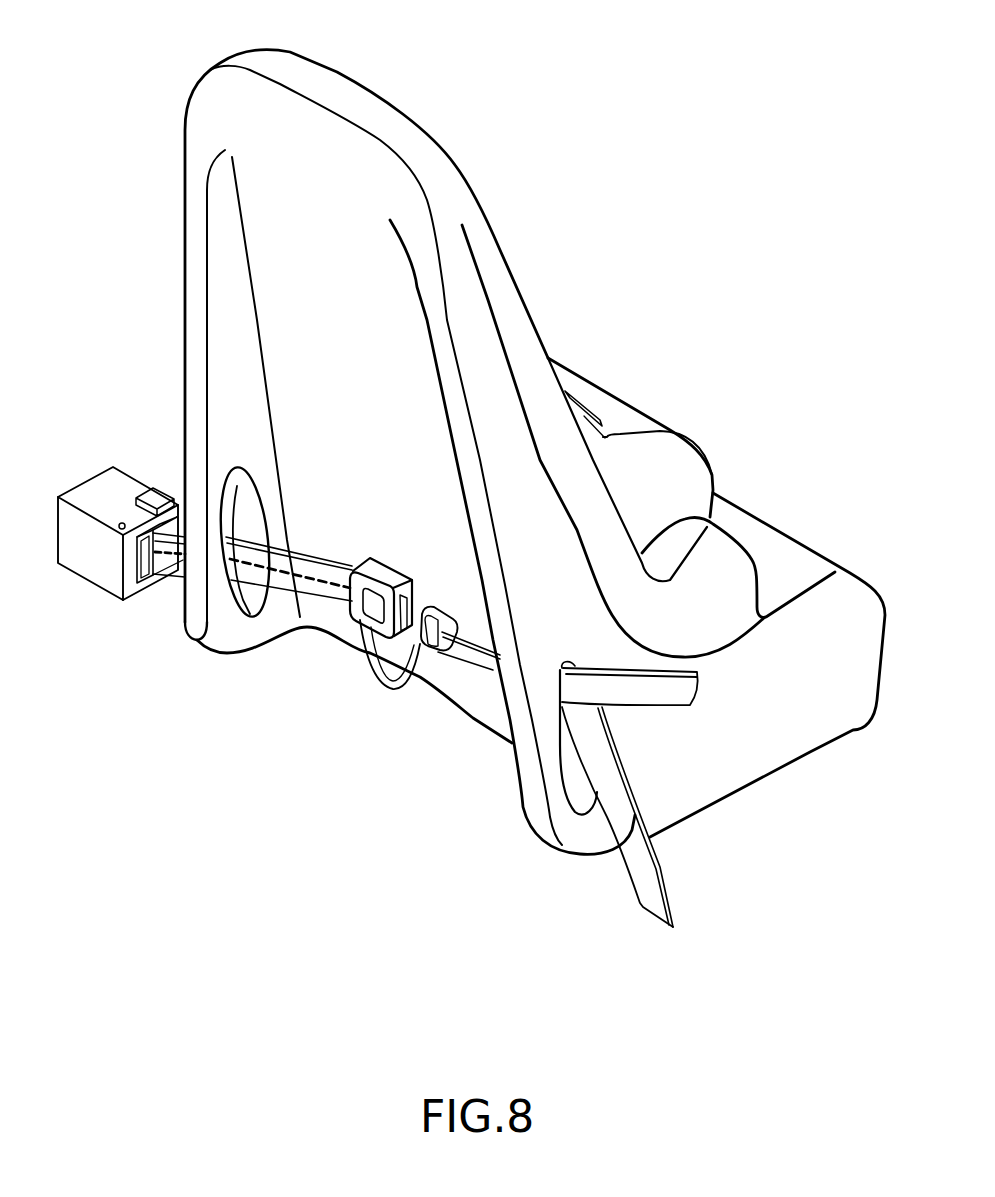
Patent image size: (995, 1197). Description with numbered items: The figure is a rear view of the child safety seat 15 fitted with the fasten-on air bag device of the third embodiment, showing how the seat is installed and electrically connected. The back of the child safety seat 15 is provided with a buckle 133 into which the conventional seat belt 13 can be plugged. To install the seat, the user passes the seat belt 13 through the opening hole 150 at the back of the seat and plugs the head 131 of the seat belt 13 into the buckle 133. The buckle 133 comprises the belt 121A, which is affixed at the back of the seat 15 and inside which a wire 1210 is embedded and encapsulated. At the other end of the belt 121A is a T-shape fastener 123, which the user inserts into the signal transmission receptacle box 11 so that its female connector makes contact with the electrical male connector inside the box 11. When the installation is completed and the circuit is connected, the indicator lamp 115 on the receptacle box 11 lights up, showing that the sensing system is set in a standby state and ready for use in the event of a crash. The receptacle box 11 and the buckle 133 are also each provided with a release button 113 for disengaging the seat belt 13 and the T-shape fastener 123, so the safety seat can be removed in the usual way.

The child safety seat 15 is at (357, 107).
The signal transmission receptacle box 11 is at (93, 468).
The release button 113 is at (150, 488).
The indicator lamp 115 is at (120, 530).
The T-shape fastener 123 is at (147, 584).
The belt 121A is at (312, 558).
The wire 1210 is at (323, 585).
The opening hole 150 is at (241, 590).
The buckle 133 is at (363, 625).
The head 131 is at (415, 645).
The seat belt 13 is at (483, 675).